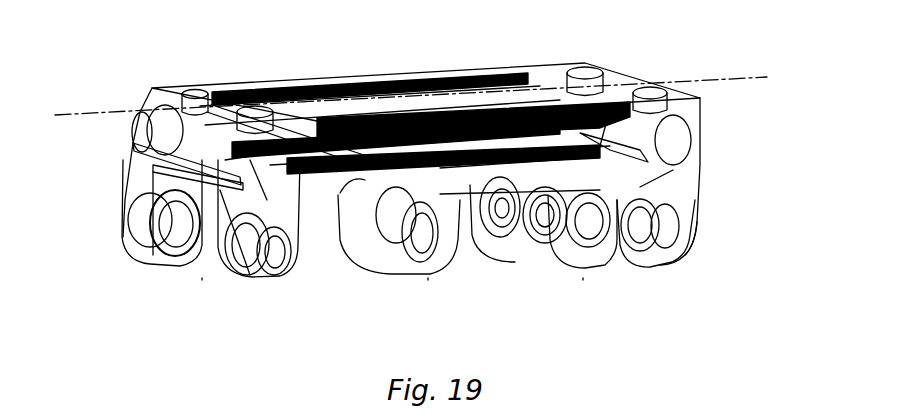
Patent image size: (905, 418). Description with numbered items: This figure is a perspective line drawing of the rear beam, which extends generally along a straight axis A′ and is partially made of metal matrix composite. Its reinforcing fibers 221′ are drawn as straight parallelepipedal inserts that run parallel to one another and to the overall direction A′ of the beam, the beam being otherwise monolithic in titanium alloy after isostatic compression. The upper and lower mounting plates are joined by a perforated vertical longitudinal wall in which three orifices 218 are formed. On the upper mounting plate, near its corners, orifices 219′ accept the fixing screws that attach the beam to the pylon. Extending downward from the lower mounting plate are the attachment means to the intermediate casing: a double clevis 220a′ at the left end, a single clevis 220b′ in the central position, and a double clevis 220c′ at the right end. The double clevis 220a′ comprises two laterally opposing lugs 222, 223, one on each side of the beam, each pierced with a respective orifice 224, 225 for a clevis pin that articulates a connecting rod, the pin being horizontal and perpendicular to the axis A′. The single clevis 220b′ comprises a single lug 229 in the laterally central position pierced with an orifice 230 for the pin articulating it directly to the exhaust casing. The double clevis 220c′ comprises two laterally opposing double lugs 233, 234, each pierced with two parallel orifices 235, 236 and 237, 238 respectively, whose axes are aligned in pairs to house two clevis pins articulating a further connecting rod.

The orifice 218 is at (703, 99).
The orifice 219′ is at (198, 93).
The reinforcing fibers 221′ is at (420, 82).
The axis A′ is at (720, 77).
The lug 222 is at (140, 182).
The lug 223 is at (298, 218).
The orifice 224 is at (176, 270).
The orifice 225 is at (272, 275).
The lug 229 is at (377, 252).
The orifice 230 is at (428, 235).
The double lug 233 is at (679, 192).
The double lug 234 is at (532, 242).
The orifice 235 is at (613, 253).
The orifice 236 is at (672, 236).
The orifice 237 is at (521, 232).
The orifice 238 is at (600, 190).
The double clevis 220a′ is at (202, 277).
The single clevis 220b′ is at (428, 277).
The double clevis 220c′ is at (583, 277).